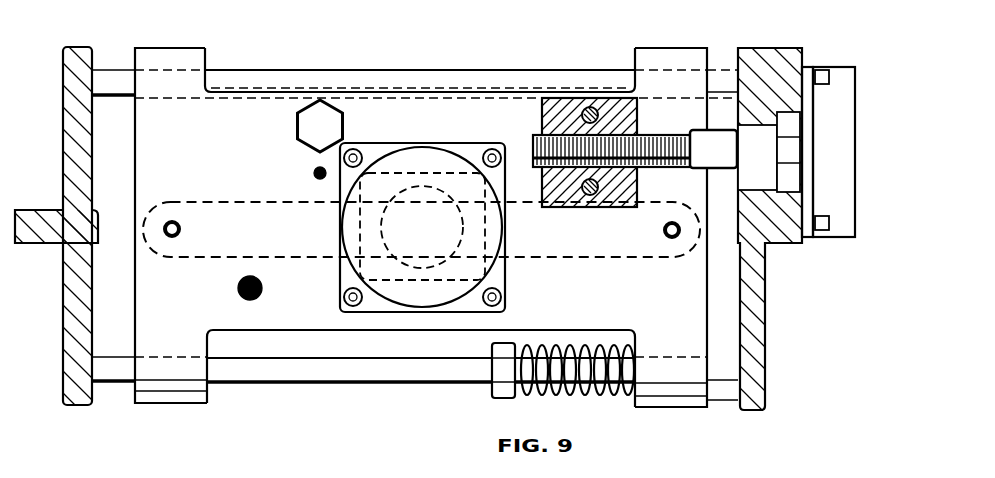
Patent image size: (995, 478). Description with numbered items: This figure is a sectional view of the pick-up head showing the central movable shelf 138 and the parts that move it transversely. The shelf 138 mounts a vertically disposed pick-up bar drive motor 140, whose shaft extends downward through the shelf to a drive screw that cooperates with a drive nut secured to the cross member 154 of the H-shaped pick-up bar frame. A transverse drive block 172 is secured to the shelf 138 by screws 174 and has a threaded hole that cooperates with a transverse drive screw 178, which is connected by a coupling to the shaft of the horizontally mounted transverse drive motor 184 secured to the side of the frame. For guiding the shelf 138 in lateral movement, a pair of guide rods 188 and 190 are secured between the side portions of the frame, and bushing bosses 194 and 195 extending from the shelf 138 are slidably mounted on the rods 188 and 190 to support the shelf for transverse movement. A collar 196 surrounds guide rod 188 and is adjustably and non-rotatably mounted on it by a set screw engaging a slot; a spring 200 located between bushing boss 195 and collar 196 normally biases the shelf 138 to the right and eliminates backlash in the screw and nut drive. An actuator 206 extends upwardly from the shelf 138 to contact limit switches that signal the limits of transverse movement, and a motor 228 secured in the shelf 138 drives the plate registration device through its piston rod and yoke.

The central movable shelf 138 is at (436, 227).
The pick-up bar drive motor 140 is at (447, 155).
The cross member 154 is at (253, 218).
The transverse drive block 172 is at (637, 118).
The screws 174 is at (591, 106).
The transverse drive screw 178 is at (655, 168).
The transverse drive motor 184 is at (828, 65).
The guide rod 188 is at (322, 384).
The guide rod 190 is at (350, 70).
The bushing boss 194 is at (200, 422).
The bushing boss 195 is at (675, 426).
The collar 196 is at (497, 398).
The spring 200 is at (573, 396).
The actuator 206 is at (254, 278).
The motor 228 is at (297, 114).